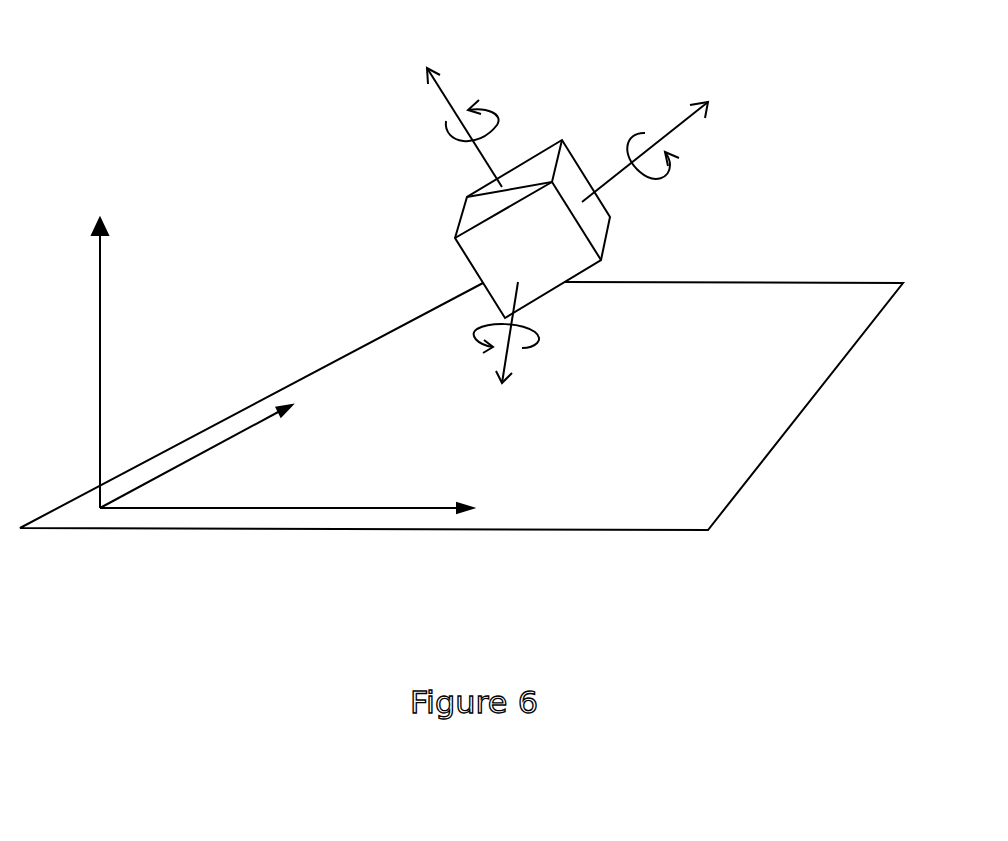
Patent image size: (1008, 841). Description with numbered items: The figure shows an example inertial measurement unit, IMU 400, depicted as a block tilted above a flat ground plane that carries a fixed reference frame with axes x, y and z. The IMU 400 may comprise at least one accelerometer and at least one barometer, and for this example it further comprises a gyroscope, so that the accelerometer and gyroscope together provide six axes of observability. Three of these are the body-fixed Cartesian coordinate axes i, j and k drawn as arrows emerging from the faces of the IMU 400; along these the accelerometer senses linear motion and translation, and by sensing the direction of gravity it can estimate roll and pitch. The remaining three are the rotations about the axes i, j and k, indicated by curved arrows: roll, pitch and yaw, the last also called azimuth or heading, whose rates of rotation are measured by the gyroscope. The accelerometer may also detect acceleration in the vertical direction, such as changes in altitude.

The inertial measurement unit 400 is at (518, 282).
The world frame x axis x is at (300, 512).
The world frame y axis y is at (207, 450).
The world frame z axis z is at (100, 349).
The i axis i is at (507, 350).
The j axis j is at (653, 143).
The k axis k is at (453, 111).